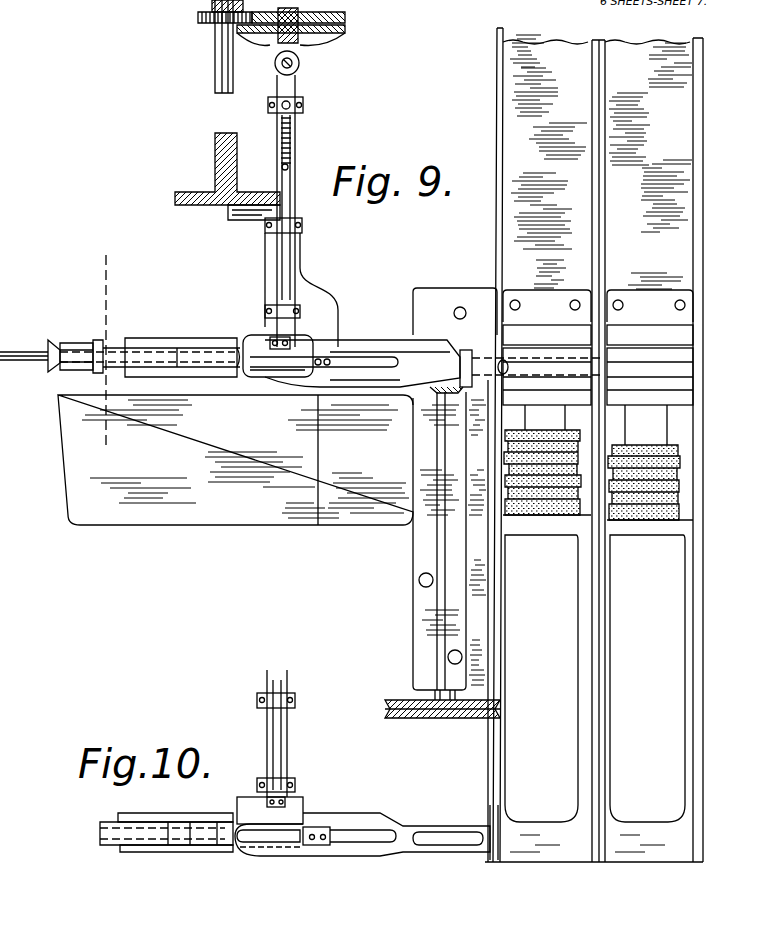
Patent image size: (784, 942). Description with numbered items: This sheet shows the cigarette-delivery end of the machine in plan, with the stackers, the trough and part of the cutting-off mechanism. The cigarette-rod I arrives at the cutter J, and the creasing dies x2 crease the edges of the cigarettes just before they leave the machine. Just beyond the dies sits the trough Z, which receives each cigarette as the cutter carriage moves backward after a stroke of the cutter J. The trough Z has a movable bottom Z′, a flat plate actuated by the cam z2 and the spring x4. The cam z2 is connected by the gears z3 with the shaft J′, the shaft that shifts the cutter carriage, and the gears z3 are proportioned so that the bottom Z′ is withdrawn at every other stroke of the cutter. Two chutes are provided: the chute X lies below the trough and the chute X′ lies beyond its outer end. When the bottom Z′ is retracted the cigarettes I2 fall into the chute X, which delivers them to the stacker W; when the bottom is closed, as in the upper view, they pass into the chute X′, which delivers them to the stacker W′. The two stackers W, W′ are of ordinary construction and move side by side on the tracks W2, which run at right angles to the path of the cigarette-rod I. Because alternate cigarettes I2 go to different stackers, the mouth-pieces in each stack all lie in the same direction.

In FIG. 9, the gears z3 is at (365, 18).
In FIG. 9, the cam z2 is at (320, 40).
In FIG. 9, the shaft J′ is at (215, 65).
In FIG. 9, the spring x4 is at (280, 137).
In FIG. 9, the cutter J is at (108, 282).
In FIG. 9, the cigarette-rod I is at (14, 350).
In FIG. 9, the movable bottom Z′ is at (265, 338).
In FIG. 10, the movable bottom Z′ is at (285, 820).
In FIG. 9, the trough Z is at (315, 335).
In FIG. 10, the trough Z is at (272, 850).
In FIG. 9, the chute X′ is at (395, 341).
In FIG. 9, the cigarettes I2 is at (545, 548).
In FIG. 10, the cigarettes I2 is at (375, 840).
In FIG. 9, the dies x2 is at (197, 363).
In FIG. 10, the dies x2 is at (190, 848).
In FIG. 9, the chute X is at (290, 396).
In FIG. 10, the chute X is at (376, 813).
In FIG. 9, the stacker W is at (500, 500).
In FIG. 9, the stacker W′ is at (693, 472).
In FIG. 9, the tracks W2 is at (703, 720).